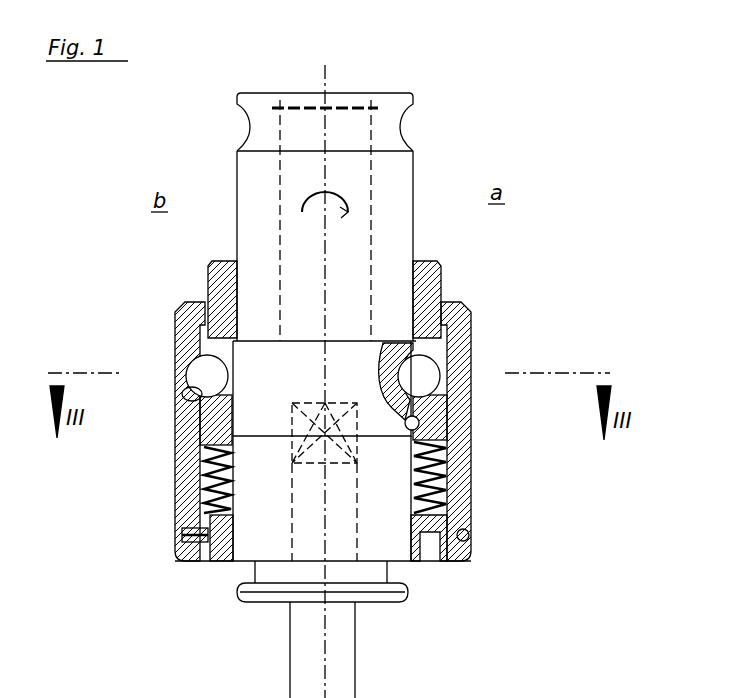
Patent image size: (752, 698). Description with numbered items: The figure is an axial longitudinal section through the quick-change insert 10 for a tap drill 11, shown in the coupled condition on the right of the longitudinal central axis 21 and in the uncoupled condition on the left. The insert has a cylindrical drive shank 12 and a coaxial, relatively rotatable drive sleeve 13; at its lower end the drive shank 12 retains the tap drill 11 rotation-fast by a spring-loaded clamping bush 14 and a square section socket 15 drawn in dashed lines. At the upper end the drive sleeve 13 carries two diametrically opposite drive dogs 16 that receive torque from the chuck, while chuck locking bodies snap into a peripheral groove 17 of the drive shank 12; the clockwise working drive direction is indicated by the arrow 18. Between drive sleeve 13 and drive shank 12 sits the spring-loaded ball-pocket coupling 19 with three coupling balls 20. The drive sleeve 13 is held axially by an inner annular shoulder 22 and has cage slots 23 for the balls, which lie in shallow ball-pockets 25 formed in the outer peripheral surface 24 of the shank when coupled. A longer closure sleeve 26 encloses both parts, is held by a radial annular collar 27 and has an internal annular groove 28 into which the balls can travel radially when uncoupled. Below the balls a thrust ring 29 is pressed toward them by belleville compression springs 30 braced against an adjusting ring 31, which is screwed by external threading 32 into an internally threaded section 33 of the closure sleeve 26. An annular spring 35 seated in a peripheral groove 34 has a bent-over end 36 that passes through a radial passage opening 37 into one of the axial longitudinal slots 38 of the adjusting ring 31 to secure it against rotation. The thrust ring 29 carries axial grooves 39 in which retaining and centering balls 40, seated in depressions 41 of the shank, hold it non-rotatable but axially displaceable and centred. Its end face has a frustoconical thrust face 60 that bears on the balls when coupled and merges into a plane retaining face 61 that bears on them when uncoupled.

The quick-change insert 10 is at (445, 157).
The tap drill 11 is at (296, 672).
The drive shank 12 is at (402, 205).
The drive sleeve 13 is at (425, 287).
The clamping bush 14 is at (262, 594).
The square section socket 15 is at (296, 518).
The drive dogs 16 is at (226, 282).
The peripheral groove 17 is at (404, 132).
The arrow 18 is at (333, 186).
The ball-pocket coupling 19 is at (486, 349).
The coupling balls 20 is at (205, 365).
The longitudinal central axis 21 is at (328, 82).
The inner annular shoulder 22 is at (247, 344).
The cage slots 23 is at (448, 380).
The outer peripheral surface 24 is at (203, 350).
The ball-pockets 25 is at (398, 368).
The closure sleeve 26 is at (460, 455).
The radial annular collar 27 is at (210, 330).
The annular groove 28 is at (452, 358).
The thrust ring 29 is at (200, 432).
The compression springs 30 is at (215, 465).
The adjusting ring 31 is at (415, 556).
The external threading 32 is at (448, 556).
The internally threaded section 33 is at (205, 525).
The peripheral groove 34 is at (466, 540).
The annular spring 35 is at (190, 533).
The bent-over end 36 is at (228, 512).
The radial passage opening 37 is at (200, 548).
The axial longitudinal slots 38 is at (212, 552).
The axial grooves 39 is at (455, 405).
The retaining and centering ball 40 is at (445, 422).
The depression 41 is at (407, 429).
The frustoconical inner thrust face 60 is at (232, 412).
The plane retaining face 61 is at (200, 388).